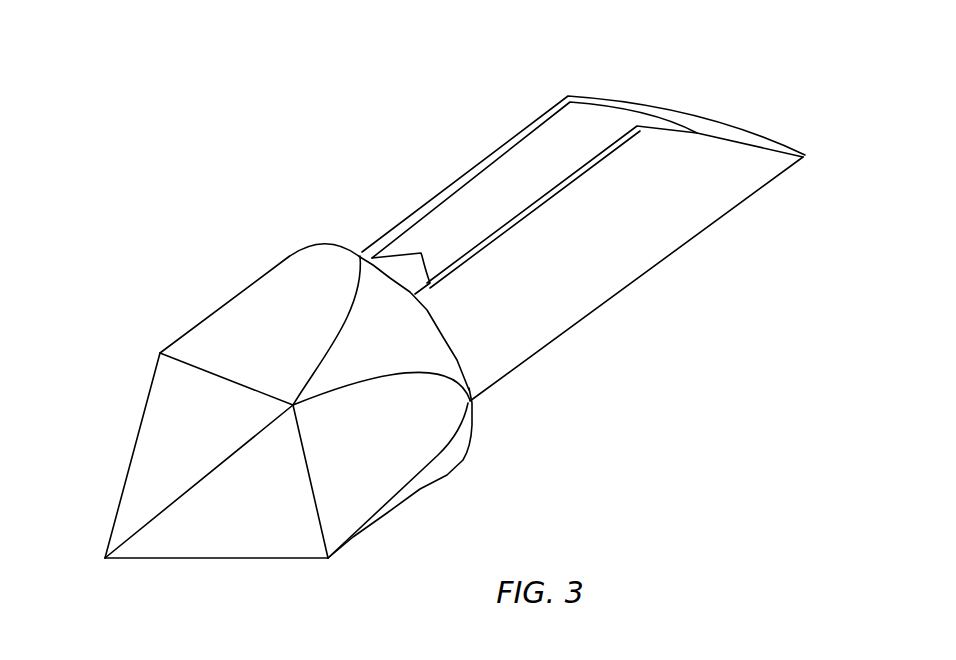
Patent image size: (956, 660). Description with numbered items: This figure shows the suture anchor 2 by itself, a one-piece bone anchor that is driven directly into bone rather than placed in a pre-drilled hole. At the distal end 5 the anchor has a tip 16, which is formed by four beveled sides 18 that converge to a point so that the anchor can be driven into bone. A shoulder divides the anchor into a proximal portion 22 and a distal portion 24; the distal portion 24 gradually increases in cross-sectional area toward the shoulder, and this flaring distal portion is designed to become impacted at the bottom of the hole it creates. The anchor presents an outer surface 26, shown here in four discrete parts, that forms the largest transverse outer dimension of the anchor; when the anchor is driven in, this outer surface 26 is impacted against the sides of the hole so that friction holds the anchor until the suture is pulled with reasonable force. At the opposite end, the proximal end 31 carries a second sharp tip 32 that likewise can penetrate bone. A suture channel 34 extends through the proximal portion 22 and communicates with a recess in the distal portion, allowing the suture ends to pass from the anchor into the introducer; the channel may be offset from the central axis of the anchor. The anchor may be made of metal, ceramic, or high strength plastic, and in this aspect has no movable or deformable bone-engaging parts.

The suture anchor 2 is at (378, 112).
The distal end 5 is at (105, 560).
The tip 16 is at (112, 542).
The beveled sides 18 is at (258, 540).
The proximal portion 22 is at (583, 290).
The distal portion 24 is at (275, 295).
The outer surface 26 is at (371, 286).
The proximal end 31 is at (770, 142).
The sharp tip 32 is at (803, 158).
The suture channel 34 is at (618, 120).